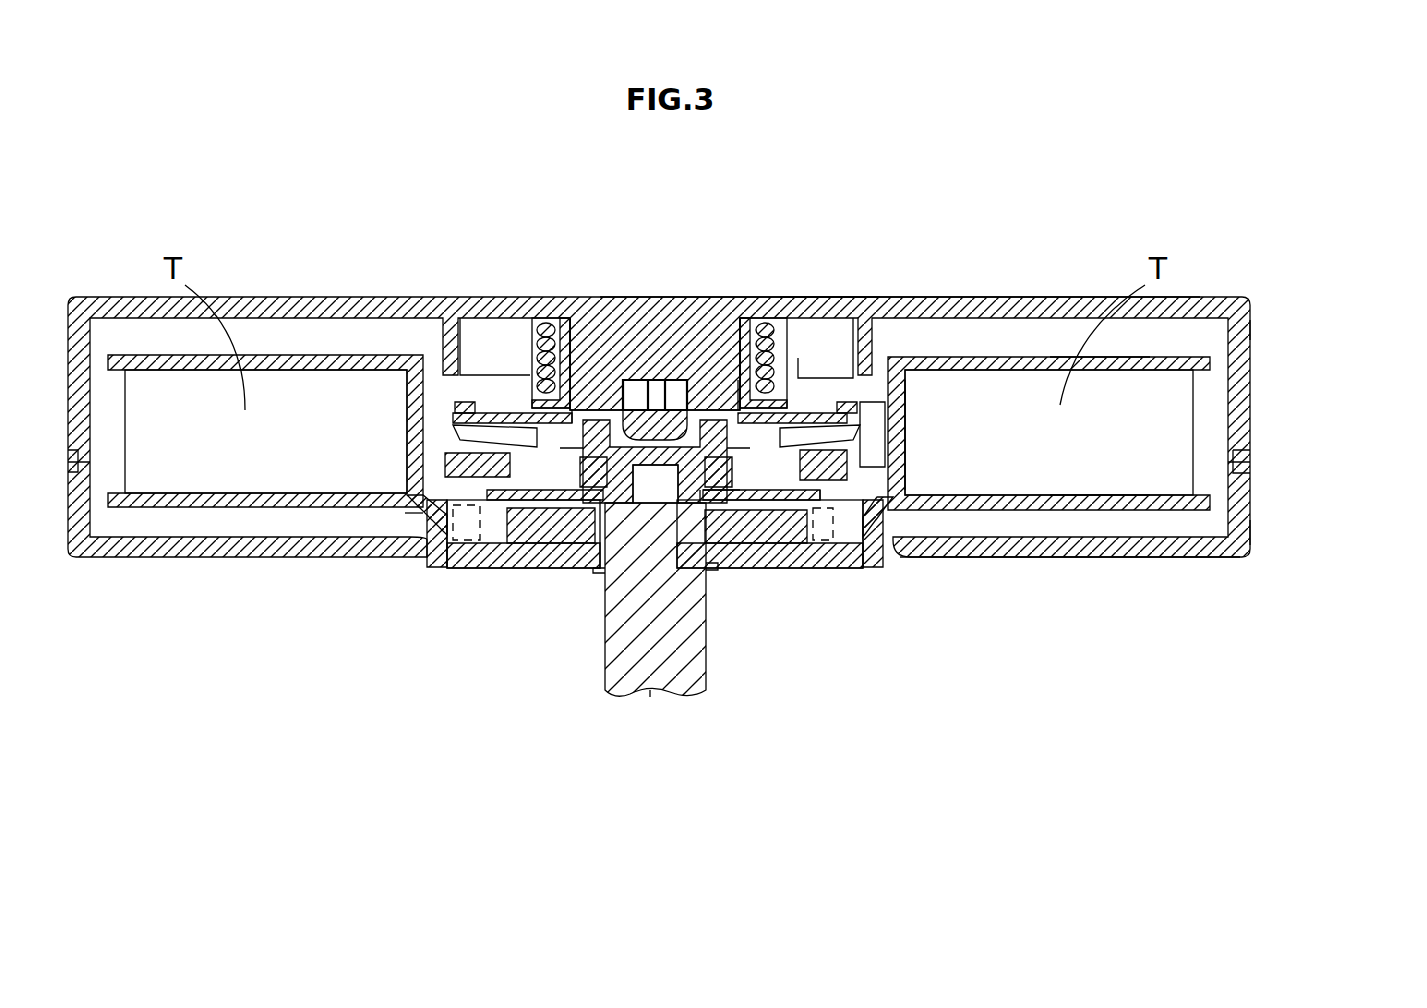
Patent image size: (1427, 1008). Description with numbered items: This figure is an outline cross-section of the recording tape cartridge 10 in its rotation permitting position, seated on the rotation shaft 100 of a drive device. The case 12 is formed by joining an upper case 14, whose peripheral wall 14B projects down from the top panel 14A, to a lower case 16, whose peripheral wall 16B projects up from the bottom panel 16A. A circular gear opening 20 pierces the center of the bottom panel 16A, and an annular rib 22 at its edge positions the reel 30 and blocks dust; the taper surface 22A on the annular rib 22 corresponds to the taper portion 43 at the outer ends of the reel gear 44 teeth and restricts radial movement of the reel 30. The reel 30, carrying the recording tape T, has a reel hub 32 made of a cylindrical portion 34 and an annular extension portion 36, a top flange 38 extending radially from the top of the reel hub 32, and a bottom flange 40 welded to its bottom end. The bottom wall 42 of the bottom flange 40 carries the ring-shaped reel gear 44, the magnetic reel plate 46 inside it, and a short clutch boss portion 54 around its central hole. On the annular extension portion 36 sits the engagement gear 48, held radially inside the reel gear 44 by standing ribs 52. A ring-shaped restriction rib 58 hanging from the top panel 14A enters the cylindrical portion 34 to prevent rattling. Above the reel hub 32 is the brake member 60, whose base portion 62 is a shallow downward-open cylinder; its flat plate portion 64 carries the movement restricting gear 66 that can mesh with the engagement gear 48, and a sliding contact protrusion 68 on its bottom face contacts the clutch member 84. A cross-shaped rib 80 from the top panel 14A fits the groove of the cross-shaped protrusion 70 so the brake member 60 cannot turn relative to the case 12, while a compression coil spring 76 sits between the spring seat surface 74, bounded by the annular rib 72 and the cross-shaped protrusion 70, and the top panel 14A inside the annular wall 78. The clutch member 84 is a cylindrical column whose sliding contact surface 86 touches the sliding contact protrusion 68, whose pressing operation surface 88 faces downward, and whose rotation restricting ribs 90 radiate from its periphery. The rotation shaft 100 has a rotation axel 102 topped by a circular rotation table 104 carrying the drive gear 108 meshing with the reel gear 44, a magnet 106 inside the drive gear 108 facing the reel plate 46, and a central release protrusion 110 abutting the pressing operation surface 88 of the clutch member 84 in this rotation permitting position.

The recording tape cartridge 10 is at (920, 185).
The case 12 is at (1355, 405).
The upper case 14 is at (1258, 398).
The top panel 14A is at (1055, 305).
The peripheral wall 14B is at (1248, 325).
The lower case 16 is at (1258, 518).
The bottom panel 16A is at (1103, 558).
The peripheral wall 16B is at (1248, 545).
The gear opening 20 is at (437, 525).
The annular rib 22 is at (405, 530).
The taper surface 22A is at (900, 510).
The reel 30 is at (945, 350).
The reel hub 32 is at (978, 395).
The cylindrical portion 34 is at (903, 395).
The annular extension portion 36 is at (903, 472).
The top flange 38 is at (1090, 367).
The bottom flange 40 is at (1090, 500).
The bottom wall 42 is at (770, 547).
The taper portion 43 is at (405, 513).
The reel gear 44 is at (443, 520).
The reel plate 46 is at (762, 500).
The engagement gear 48 is at (470, 453).
The standing ribs 52 is at (433, 412).
The clutch boss portion 54 is at (575, 470).
The restriction rib 58 is at (845, 330).
The brake member 60 is at (515, 395).
The base portion 62 is at (590, 370).
The flat plate portion 64 is at (482, 385).
The movement restricting gear 66 is at (453, 428).
The sliding contact protrusion 68 is at (660, 435).
The cross-shaped protrusion 70 is at (738, 405).
The annular rib 72 is at (777, 335).
The spring seat surface 74 is at (780, 335).
The compression coil spring 76 is at (838, 400).
The annular wall 78 is at (545, 340).
The cross-shaped rib 80 is at (652, 345).
The clutch member 84 is at (612, 470).
The sliding contact surface 86 is at (612, 415).
The pressing operation surface 88 is at (690, 505).
The rotation restricting ribs 90 is at (690, 400).
The rotation shaft 100 is at (604, 681).
The rotation axel 102 is at (697, 677).
The rotation table 104 is at (793, 530).
The magnet 106 is at (538, 530).
The drive gear 108 is at (485, 528).
The release protrusion 110 is at (662, 560).